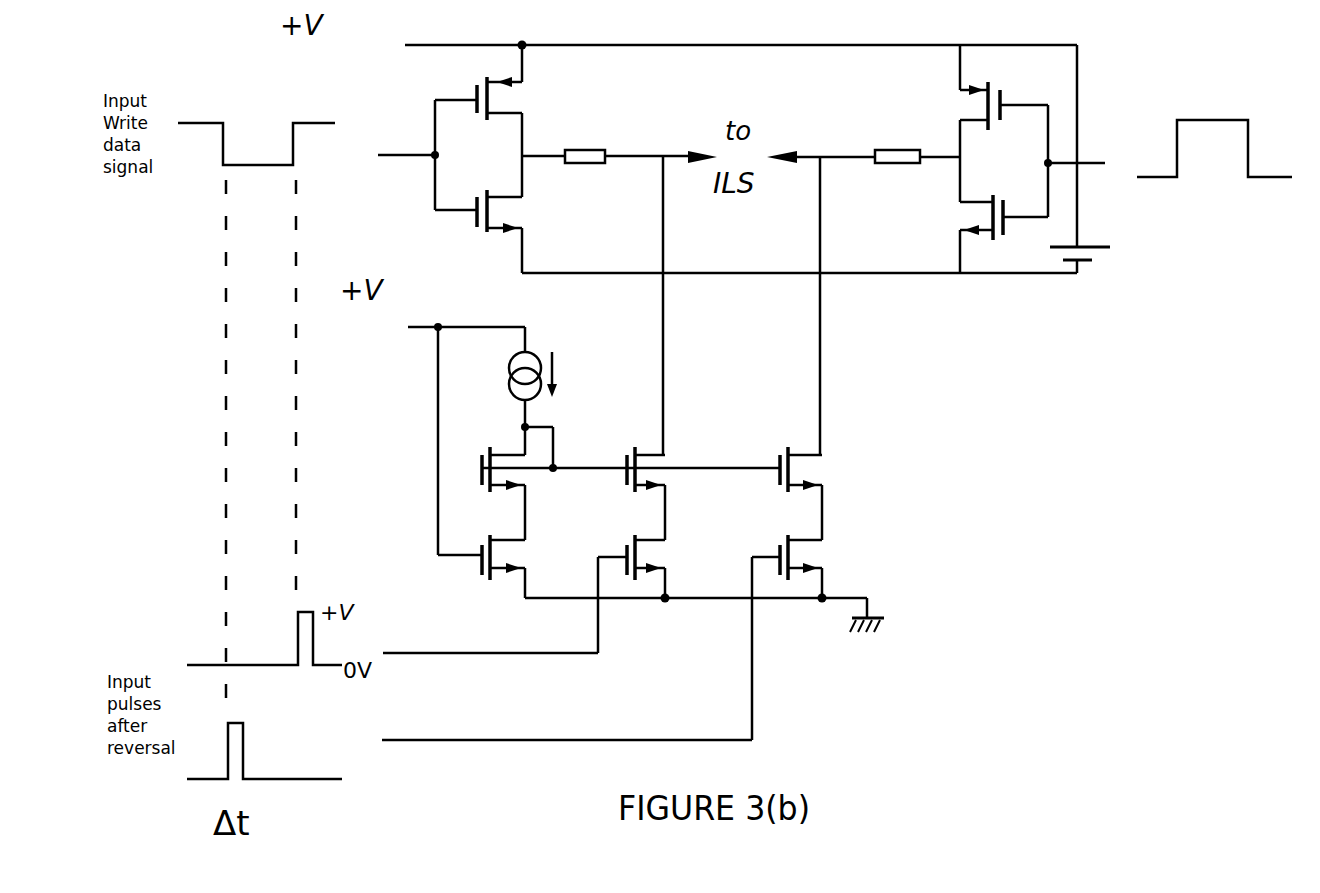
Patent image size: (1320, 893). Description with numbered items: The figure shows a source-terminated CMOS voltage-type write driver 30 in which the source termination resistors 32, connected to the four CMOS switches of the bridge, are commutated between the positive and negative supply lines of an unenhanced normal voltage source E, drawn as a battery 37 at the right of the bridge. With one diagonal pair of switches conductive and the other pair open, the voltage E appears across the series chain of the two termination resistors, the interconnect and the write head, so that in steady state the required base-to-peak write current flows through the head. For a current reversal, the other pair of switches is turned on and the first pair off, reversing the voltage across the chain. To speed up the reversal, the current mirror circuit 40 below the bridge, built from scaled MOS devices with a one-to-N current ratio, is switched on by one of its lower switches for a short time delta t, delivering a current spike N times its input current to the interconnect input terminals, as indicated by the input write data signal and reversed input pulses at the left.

The source-terminated CMOS voltage-type write driver 30 is at (1118, 415).
The source termination resistors 32 is at (617, 115).
The voltage source E 37 is at (1152, 241).
The current mirror circuit 40 is at (880, 511).